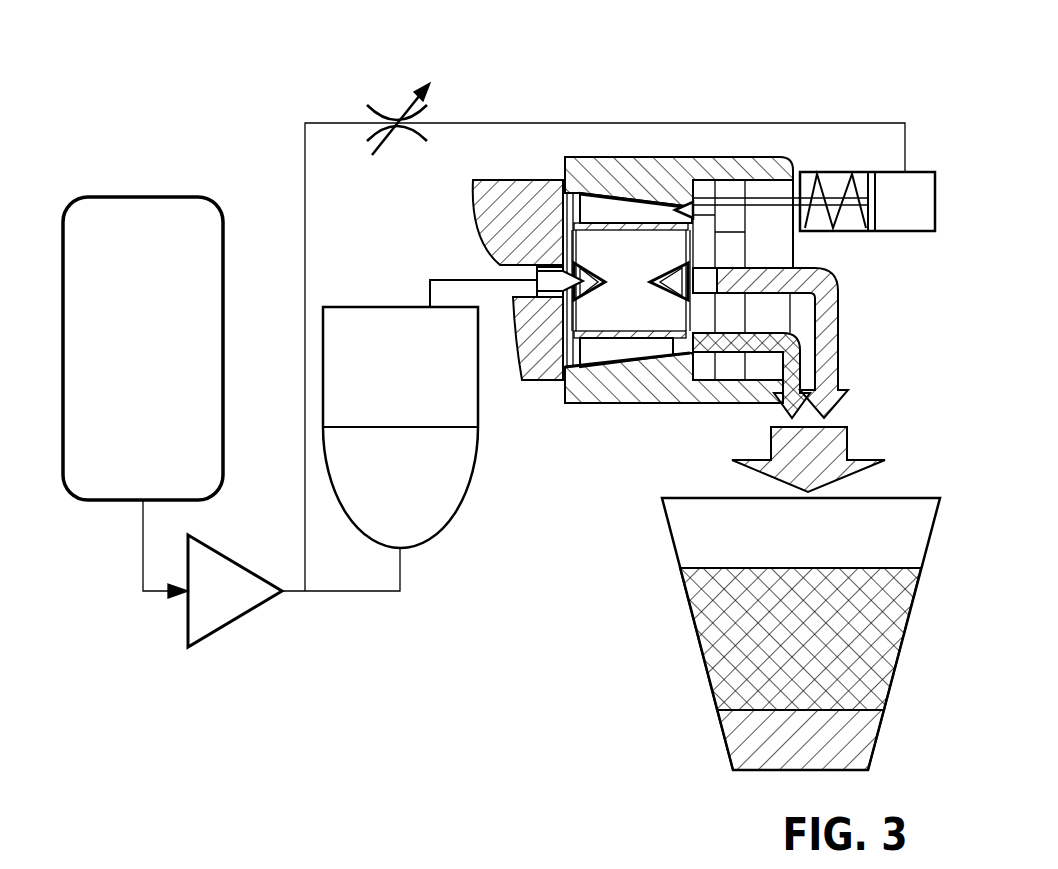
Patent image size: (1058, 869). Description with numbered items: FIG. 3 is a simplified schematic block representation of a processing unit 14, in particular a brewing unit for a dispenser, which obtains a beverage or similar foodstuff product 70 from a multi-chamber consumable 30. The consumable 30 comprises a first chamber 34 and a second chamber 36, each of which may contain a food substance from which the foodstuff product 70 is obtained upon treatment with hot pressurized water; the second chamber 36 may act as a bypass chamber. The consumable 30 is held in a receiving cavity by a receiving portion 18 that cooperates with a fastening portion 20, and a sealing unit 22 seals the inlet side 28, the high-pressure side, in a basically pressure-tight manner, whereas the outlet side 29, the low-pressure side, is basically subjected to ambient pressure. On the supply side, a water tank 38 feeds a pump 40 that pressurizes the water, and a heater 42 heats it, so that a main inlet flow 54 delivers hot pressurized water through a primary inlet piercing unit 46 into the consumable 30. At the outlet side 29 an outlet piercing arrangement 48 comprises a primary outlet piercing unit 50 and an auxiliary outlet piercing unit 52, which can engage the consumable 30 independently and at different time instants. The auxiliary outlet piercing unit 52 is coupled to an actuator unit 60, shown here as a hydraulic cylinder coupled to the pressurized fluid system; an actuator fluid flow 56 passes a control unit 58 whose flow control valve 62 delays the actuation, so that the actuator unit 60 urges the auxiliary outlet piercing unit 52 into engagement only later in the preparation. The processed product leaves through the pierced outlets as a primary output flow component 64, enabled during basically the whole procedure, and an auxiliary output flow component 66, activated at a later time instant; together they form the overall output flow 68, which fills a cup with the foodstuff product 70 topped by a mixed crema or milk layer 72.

The processing unit 14 is at (205, 675).
The receiving portion 18 is at (600, 403).
The fastening portion 20 is at (530, 380).
The sealing unit 22 is at (558, 372).
The inlet side 28 is at (495, 166).
The outlet side 29 is at (822, 252).
The consumable 30 is at (597, 195).
The first chamber 34 is at (635, 250).
The second chamber 36 is at (641, 348).
The water tank 38 is at (140, 215).
The pump 40 is at (223, 608).
The heater 42 is at (437, 483).
The primary inlet piercing unit 46 is at (503, 287).
The outlet piercing arrangement 48 is at (742, 252).
The primary outlet piercing unit 50 is at (700, 255).
The auxiliary outlet piercing unit 52 is at (708, 205).
The main inlet flow 54 is at (375, 593).
The actuator fluid flow 56 is at (305, 147).
The control unit 58 is at (820, 104).
The actuator unit 60 is at (925, 185).
The flow control valve 62 is at (380, 112).
The primary output flow component 64 is at (838, 362).
The auxiliary output flow component 66 is at (778, 410).
The output flow 68 is at (833, 438).
The foodstuff product 70 is at (737, 742).
The milk layer 72 is at (707, 610).